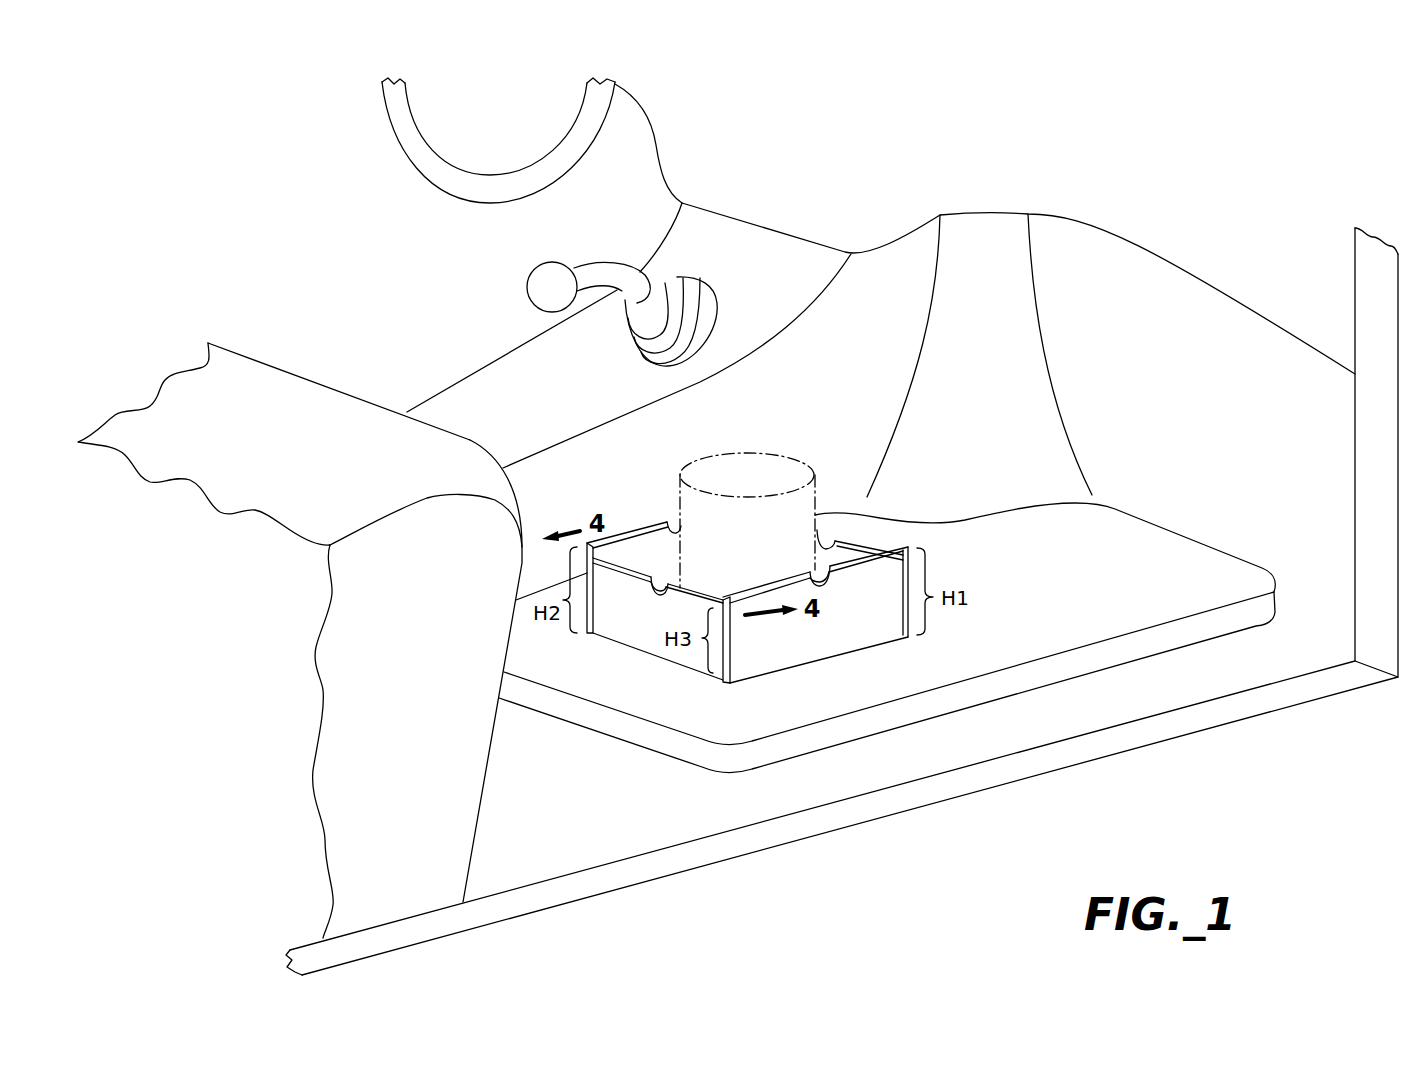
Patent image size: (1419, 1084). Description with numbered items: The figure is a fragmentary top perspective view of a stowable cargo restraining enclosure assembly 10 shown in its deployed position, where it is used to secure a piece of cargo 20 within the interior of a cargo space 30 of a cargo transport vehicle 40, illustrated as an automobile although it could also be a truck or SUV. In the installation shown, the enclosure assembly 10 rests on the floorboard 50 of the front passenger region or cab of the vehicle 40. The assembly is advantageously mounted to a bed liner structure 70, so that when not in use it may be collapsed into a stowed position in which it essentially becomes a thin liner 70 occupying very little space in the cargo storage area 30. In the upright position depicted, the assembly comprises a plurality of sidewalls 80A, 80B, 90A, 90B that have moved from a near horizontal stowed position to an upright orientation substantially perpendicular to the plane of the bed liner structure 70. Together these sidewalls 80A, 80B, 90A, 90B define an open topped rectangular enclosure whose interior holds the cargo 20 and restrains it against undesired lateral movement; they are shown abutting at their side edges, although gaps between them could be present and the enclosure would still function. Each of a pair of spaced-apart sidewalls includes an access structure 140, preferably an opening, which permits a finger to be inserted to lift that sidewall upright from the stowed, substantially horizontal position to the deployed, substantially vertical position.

The stowable cargo restraining enclosure assembly 10 is at (779, 589).
The cargo 20 is at (755, 445).
The cargo space 30 is at (1020, 352).
The cargo transport vehicle 40 is at (358, 250).
The floorboard 50 is at (484, 859).
The bed liner structure 70 is at (1077, 628).
The first sidewall 80A is at (765, 647).
The second sidewall 80B is at (670, 530).
The third sidewall 90A is at (655, 630).
The fourth sidewall 90B is at (862, 543).
The access structure 140 is at (648, 590).